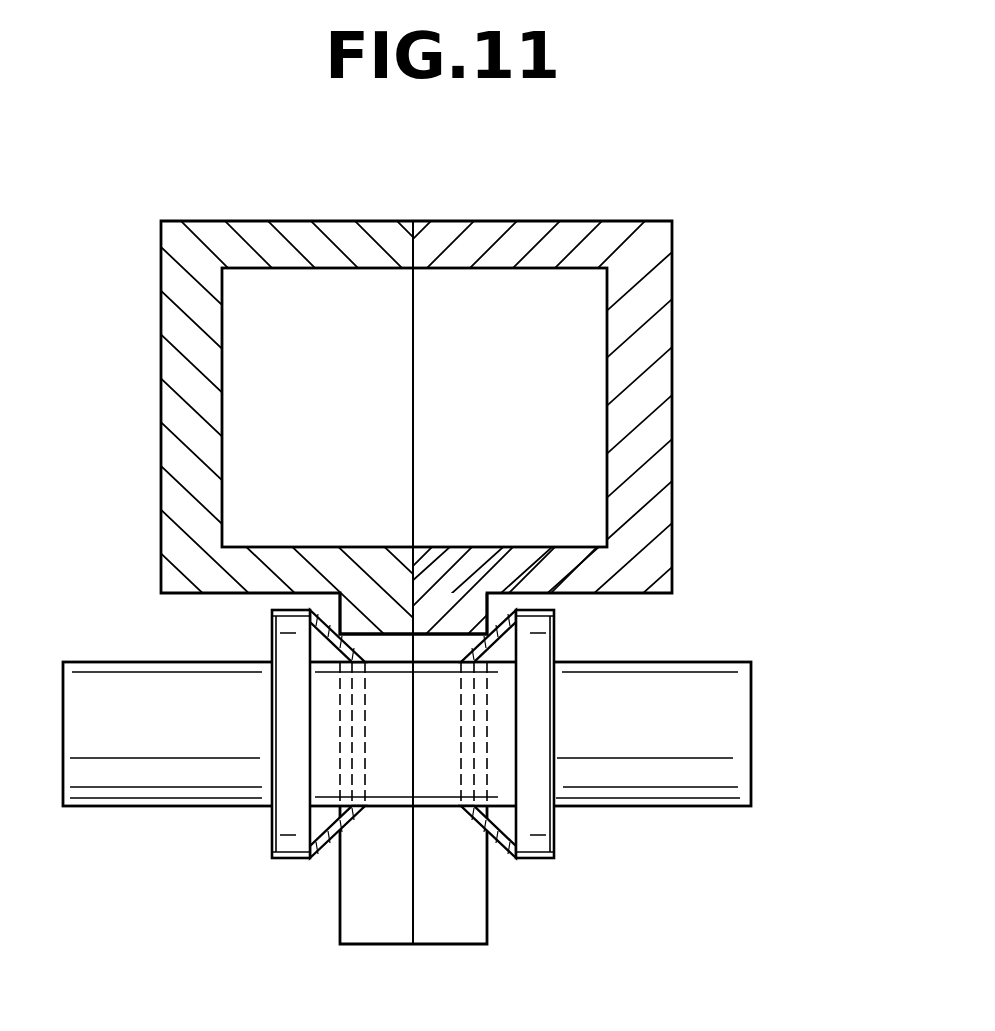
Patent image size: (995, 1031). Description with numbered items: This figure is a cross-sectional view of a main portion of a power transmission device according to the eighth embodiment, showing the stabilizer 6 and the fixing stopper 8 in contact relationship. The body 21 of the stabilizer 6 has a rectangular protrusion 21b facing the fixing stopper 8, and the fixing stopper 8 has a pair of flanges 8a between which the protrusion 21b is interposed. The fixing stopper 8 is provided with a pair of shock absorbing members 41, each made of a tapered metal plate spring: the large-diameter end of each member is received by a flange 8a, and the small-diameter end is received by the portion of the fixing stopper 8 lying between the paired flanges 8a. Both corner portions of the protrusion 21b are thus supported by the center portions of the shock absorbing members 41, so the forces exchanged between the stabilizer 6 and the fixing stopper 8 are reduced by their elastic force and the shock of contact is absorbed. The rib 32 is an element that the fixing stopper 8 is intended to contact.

The stabilizer 6 is at (672, 320).
The body 21 is at (672, 458).
The protrusion 21b is at (453, 606).
The fixing stopper 8 is at (727, 744).
The flange 8a is at (292, 806).
The shock absorbing member 41 is at (327, 852).
The rib 32 is at (448, 912).